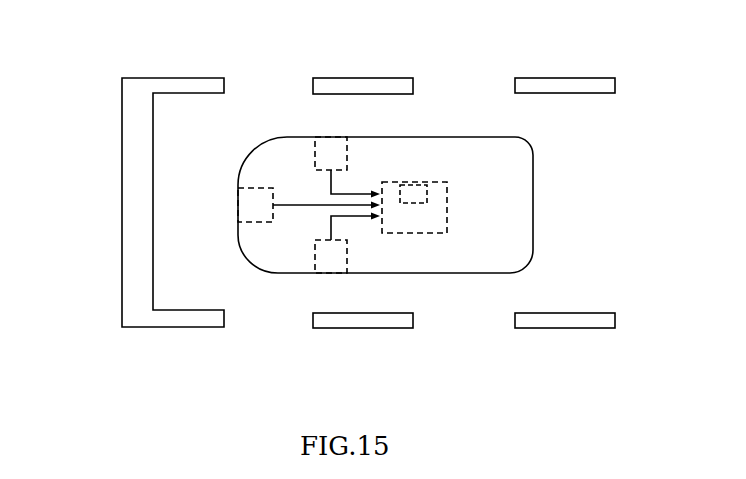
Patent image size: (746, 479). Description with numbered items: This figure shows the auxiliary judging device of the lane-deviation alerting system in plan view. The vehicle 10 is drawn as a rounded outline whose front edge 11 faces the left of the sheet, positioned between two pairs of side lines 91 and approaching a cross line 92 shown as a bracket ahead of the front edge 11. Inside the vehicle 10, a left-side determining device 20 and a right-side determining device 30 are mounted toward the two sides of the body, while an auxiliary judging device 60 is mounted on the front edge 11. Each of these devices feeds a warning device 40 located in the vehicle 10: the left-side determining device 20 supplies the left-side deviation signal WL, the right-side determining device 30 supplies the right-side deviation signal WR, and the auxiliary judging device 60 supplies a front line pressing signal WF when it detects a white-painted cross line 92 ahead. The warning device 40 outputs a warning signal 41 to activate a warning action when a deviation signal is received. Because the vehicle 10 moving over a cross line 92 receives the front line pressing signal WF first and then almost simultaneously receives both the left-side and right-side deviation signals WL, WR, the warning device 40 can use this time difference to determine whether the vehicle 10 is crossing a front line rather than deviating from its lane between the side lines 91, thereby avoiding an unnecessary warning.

The vehicle 10 is at (540, 263).
The front edge 11 is at (242, 245).
The left-side determining device 20 is at (353, 273).
The right-side determining device 30 is at (347, 133).
The warning device 40 is at (449, 180).
The warning signal 41 is at (427, 196).
The auxiliary judging device 60 is at (238, 188).
The side lines 91 is at (327, 328).
The cross line 92 is at (125, 225).
The front line pressing signal WF is at (303, 205).
The right-side deviation signal WR is at (365, 192).
The left-side deviation signal WL is at (355, 217).